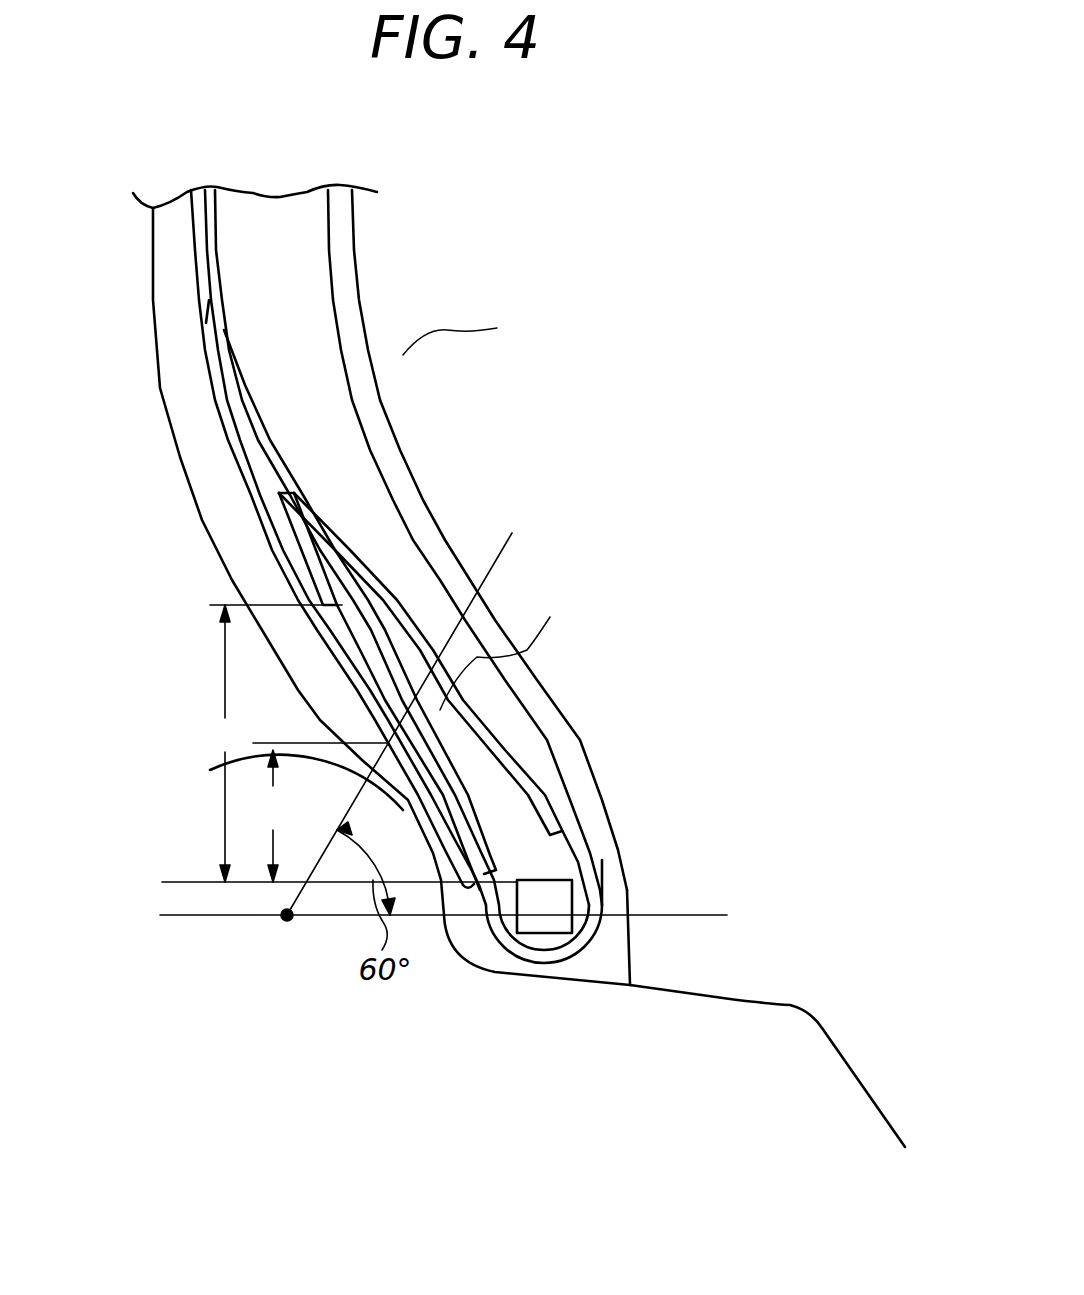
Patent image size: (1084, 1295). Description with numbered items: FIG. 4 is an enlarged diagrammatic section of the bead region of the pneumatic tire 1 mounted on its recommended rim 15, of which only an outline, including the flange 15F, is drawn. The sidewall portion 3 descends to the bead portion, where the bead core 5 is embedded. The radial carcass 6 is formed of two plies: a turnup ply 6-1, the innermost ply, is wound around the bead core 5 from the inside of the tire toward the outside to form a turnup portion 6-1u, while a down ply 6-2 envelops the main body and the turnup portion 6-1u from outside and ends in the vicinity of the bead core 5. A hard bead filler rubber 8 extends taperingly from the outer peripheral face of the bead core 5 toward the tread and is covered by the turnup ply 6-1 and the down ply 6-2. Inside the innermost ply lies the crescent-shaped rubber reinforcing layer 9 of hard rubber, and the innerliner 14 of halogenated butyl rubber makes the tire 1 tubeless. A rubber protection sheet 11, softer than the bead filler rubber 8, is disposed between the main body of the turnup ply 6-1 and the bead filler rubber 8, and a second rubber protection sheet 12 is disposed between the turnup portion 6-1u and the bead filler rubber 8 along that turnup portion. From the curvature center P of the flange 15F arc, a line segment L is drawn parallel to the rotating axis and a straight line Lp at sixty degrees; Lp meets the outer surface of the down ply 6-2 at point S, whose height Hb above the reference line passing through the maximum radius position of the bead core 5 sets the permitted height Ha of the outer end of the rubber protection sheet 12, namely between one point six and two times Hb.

The pneumatic tire 1 is at (514, 330).
The sidewall portion 3 is at (160, 388).
The bead core 5 is at (548, 923).
The radial carcass 6 is at (215, 242).
The turnup ply 6-1 is at (307, 487).
The down ply 6-2 is at (242, 492).
The turnup portion 6-1u is at (517, 740).
The bead filler rubber 8 is at (505, 647).
The rubber reinforcing layer 9 is at (303, 307).
The rubber protection sheet 11 is at (317, 552).
The rubber protection sheet 12 is at (467, 820).
The innerliner 14 is at (390, 413).
The rim 15 is at (730, 999).
The flange 15F is at (310, 743).